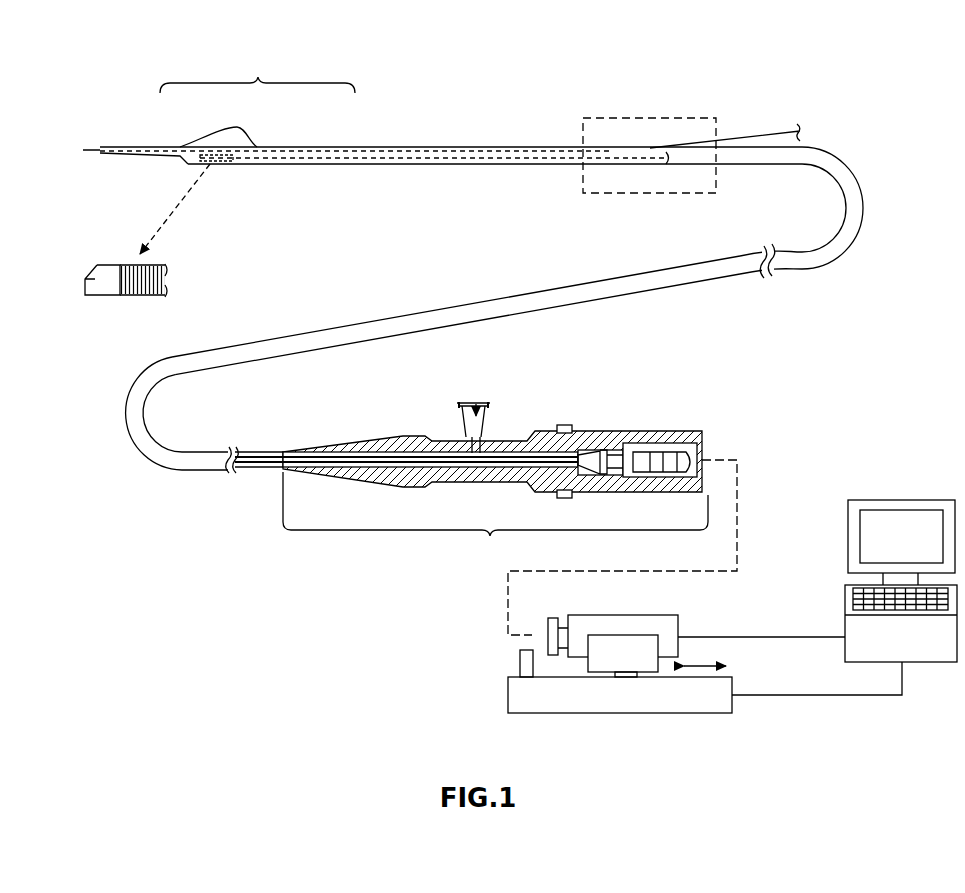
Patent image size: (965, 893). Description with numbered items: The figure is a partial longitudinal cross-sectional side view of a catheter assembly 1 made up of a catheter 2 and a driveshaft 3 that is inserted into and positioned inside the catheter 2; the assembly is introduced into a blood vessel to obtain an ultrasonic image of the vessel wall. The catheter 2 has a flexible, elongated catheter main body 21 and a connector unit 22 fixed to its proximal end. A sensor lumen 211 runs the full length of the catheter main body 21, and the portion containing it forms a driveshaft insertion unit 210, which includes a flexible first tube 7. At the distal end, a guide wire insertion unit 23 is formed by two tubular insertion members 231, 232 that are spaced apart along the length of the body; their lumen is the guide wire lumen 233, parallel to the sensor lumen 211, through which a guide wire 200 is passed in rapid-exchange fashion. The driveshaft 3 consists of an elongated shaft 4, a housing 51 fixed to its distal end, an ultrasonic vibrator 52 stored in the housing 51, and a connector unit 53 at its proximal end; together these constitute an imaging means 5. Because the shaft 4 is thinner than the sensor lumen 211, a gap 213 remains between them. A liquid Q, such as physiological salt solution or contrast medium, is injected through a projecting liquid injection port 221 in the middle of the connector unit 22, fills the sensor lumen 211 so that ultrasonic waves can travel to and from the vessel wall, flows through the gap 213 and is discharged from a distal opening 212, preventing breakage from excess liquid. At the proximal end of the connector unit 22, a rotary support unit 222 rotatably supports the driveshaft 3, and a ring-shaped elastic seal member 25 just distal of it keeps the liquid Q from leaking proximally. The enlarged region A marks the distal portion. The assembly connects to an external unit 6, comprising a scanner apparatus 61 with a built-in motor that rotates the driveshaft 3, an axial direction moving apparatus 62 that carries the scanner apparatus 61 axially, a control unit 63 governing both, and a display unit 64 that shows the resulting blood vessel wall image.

The catheter assembly 1 is at (892, 148).
The catheter 2 is at (570, 282).
The driveshaft 3 is at (129, 300).
The shaft 4 is at (396, 166).
The imaging means 5 is at (668, 425).
The external unit 6 is at (928, 468).
The first tube 7 is at (481, 308).
The catheter main body 21 is at (418, 319).
The connector unit 22 is at (495, 497).
The guide wire insertion unit 23 is at (257, 74).
The seal member 25 is at (563, 425).
The housing 51 is at (218, 166).
The ultrasonic vibrator 52 is at (88, 268).
The connector unit 53 is at (650, 453).
The scanner apparatus 61 is at (648, 615).
The axial direction moving apparatus 62 is at (520, 695).
The control unit 63 is at (845, 600).
The display unit 64 is at (880, 500).
The guide wire 200 is at (767, 134).
The driveshaft insertion unit 210 is at (548, 166).
The sensor lumen 211 is at (248, 470).
The opening 212 is at (180, 158).
The gap 213 is at (250, 450).
The liquid injection port 221 is at (488, 426).
The rotary support unit 222 is at (588, 447).
The insertion member 231 is at (161, 146).
The insertion member 232 is at (310, 146).
The guide wire lumen 233 is at (218, 125).
The enlarged region A is at (649, 170).
The liquid Q is at (477, 395).